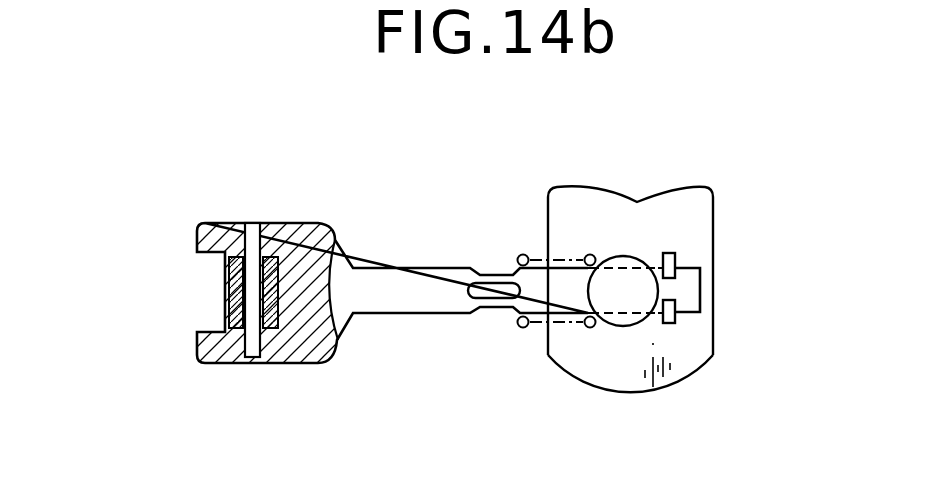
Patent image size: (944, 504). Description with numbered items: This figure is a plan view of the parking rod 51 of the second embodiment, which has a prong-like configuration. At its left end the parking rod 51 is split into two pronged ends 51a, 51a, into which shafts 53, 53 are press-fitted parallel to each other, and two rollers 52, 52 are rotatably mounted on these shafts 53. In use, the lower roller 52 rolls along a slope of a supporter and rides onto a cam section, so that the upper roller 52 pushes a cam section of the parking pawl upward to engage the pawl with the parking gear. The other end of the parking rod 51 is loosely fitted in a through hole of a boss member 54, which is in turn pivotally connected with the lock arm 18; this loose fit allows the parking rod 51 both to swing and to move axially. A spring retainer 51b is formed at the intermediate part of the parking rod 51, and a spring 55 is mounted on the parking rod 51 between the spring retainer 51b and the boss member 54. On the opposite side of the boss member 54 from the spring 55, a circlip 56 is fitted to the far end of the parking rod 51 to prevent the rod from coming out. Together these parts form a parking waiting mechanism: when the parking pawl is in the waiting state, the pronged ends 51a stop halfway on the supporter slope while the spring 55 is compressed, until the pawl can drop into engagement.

The lock arm 18 is at (692, 228).
The parking rod 51 is at (405, 293).
The pronged ends 51a is at (312, 223).
The spring retainer 51b is at (487, 290).
The rollers 52 is at (228, 292).
The shafts 53 is at (252, 223).
The boss member 54 is at (617, 292).
The spring 55 is at (518, 254).
The circlip 56 is at (676, 327).